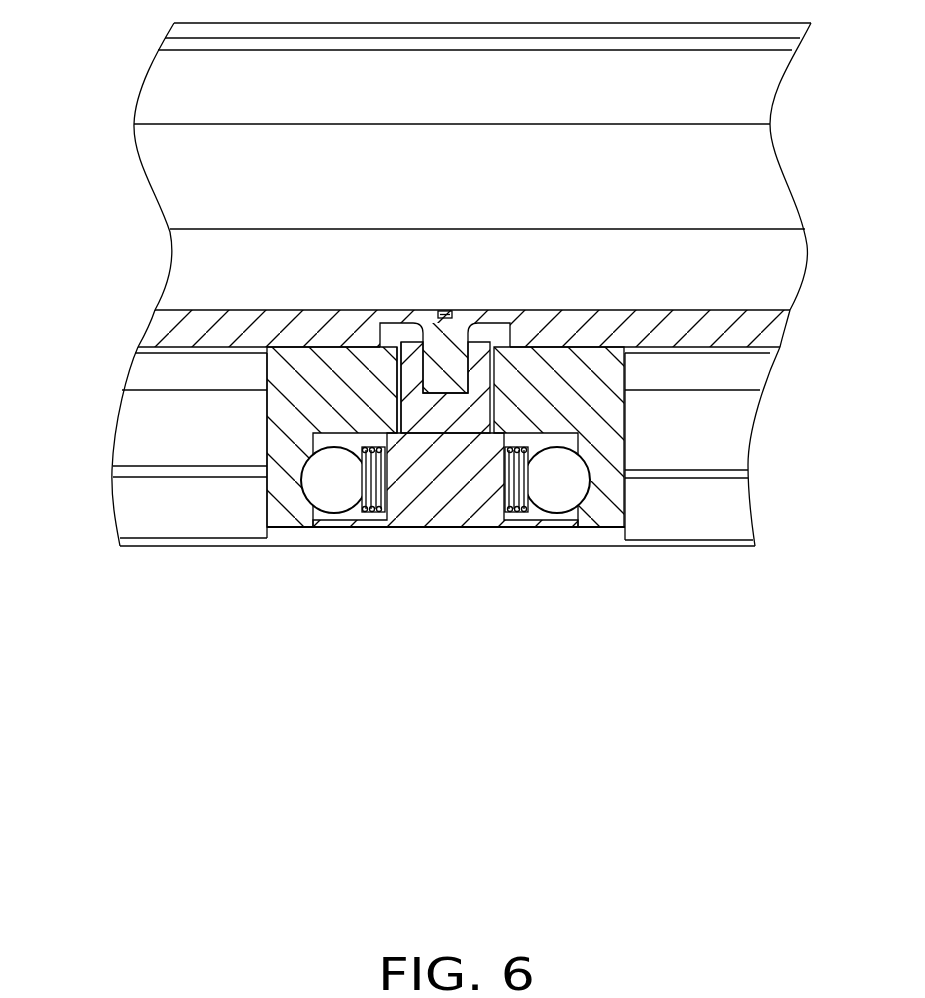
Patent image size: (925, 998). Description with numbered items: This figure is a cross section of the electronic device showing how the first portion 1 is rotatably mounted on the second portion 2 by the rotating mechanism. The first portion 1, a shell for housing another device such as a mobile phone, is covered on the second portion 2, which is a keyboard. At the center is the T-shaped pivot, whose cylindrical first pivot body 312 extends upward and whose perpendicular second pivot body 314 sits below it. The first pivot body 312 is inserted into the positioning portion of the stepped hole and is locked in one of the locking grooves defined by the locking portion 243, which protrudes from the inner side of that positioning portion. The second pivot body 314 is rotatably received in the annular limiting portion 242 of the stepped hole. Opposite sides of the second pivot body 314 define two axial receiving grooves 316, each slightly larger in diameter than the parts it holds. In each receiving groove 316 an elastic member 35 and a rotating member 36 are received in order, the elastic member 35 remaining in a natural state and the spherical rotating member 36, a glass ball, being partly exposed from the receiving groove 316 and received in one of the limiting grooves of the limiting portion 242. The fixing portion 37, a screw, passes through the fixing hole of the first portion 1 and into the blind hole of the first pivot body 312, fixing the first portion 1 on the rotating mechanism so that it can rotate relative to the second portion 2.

The first portion 1 is at (725, 193).
The second portion 2 is at (715, 508).
The fixing portion 37 is at (403, 317).
The locking portion 243 is at (402, 378).
The first pivot body 312 is at (421, 417).
The rotating member 36 is at (318, 480).
The elastic member 35 is at (372, 514).
The second pivot body 314 is at (432, 495).
The receiving groove 316 is at (535, 515).
The limiting portion 242 is at (572, 520).